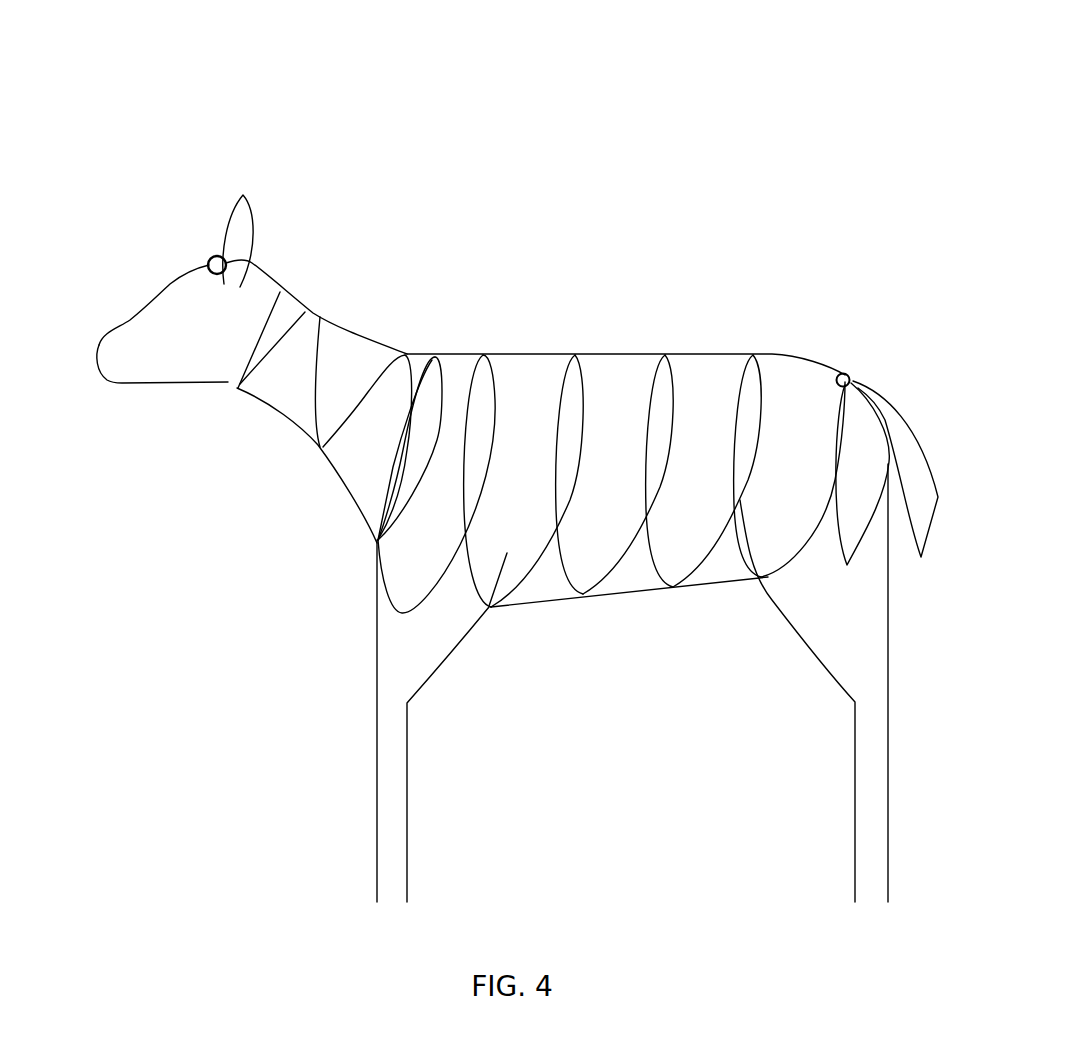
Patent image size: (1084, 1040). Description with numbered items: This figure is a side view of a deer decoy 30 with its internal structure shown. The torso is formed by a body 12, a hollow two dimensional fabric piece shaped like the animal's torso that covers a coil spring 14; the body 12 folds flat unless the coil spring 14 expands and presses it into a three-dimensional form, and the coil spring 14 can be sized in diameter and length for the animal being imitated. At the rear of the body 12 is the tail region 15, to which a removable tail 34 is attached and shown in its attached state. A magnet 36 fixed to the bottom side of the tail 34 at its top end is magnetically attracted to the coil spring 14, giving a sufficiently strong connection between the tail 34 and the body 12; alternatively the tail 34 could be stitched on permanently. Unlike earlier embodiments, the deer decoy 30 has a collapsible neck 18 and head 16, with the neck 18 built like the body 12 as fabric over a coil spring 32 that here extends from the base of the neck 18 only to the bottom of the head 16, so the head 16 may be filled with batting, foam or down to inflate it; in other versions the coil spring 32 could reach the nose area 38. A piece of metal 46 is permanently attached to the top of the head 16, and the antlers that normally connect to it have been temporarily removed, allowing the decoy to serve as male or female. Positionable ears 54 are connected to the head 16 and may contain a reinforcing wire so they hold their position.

The deer decoy 30 is at (774, 95).
The body 12 is at (599, 352).
The coil spring 14 is at (742, 387).
The tail region 15 is at (857, 420).
The head 16 is at (180, 305).
The neck 18 is at (350, 330).
The coil spring 32 is at (354, 414).
The tail 34 is at (902, 427).
The magnet 36 is at (846, 372).
The nose area 38 is at (108, 353).
The piece of metal 46 is at (214, 255).
The ears 54 is at (238, 230).